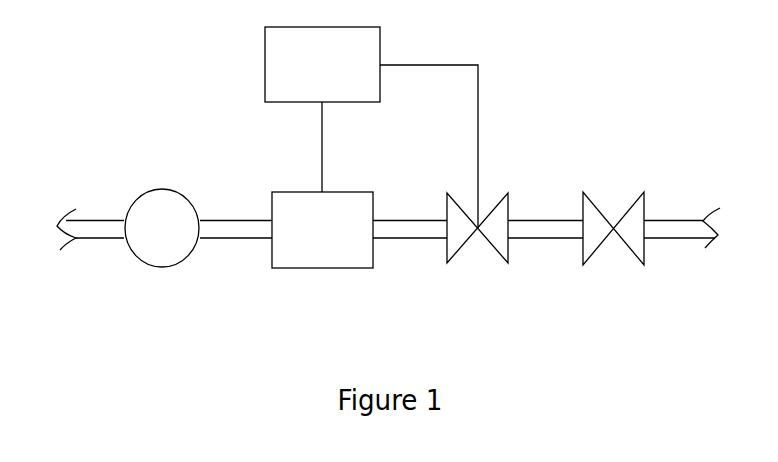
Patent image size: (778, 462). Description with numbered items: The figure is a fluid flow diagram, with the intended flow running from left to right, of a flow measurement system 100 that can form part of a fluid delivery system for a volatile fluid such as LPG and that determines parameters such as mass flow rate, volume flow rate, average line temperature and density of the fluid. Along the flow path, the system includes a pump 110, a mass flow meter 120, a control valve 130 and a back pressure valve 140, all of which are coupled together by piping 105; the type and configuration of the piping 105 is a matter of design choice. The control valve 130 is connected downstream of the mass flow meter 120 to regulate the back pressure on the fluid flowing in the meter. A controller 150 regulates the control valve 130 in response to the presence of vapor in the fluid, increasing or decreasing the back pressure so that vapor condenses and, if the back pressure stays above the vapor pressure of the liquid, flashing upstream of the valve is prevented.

The flow measurement system 100 is at (624, 82).
The piping 105 is at (96, 220).
The pump 110 is at (162, 189).
The mass flow meter 120 is at (340, 192).
The control valve 130 is at (506, 192).
The back pressure valve 140 is at (620, 213).
The controller 150 is at (265, 64).